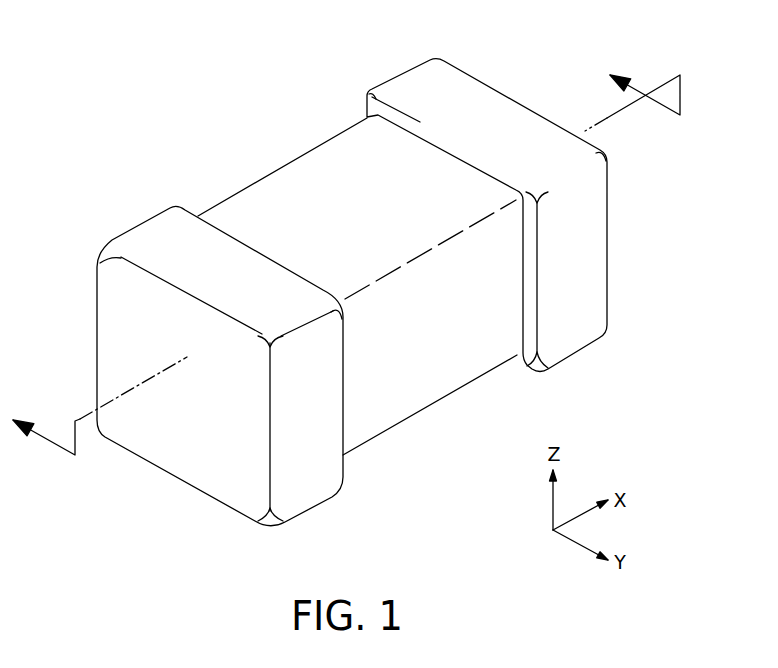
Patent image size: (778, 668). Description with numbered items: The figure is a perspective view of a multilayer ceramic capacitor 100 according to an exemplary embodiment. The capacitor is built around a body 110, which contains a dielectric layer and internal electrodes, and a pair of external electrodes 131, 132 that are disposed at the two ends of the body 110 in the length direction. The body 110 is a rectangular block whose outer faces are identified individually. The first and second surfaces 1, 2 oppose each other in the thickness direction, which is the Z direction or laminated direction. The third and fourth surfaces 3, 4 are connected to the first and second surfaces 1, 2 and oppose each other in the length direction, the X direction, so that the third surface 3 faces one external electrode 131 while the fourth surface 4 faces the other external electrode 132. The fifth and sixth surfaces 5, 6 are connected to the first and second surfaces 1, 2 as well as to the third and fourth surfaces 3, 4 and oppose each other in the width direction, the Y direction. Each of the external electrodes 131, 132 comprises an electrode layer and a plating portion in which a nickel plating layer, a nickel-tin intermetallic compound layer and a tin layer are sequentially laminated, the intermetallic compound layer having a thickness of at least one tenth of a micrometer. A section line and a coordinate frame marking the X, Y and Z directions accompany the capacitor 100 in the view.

The multilayer ceramic capacitor 100 is at (110, 67).
The body 110 is at (250, 210).
The first surface 1 is at (393, 380).
The second surface 2 is at (368, 172).
The third surface 3 is at (190, 422).
The fourth surface 4 is at (560, 230).
The fifth surface 5 is at (451, 349).
The sixth surface 6 is at (313, 192).
The external electrode 131 is at (153, 240).
The external electrode 132 is at (412, 92).